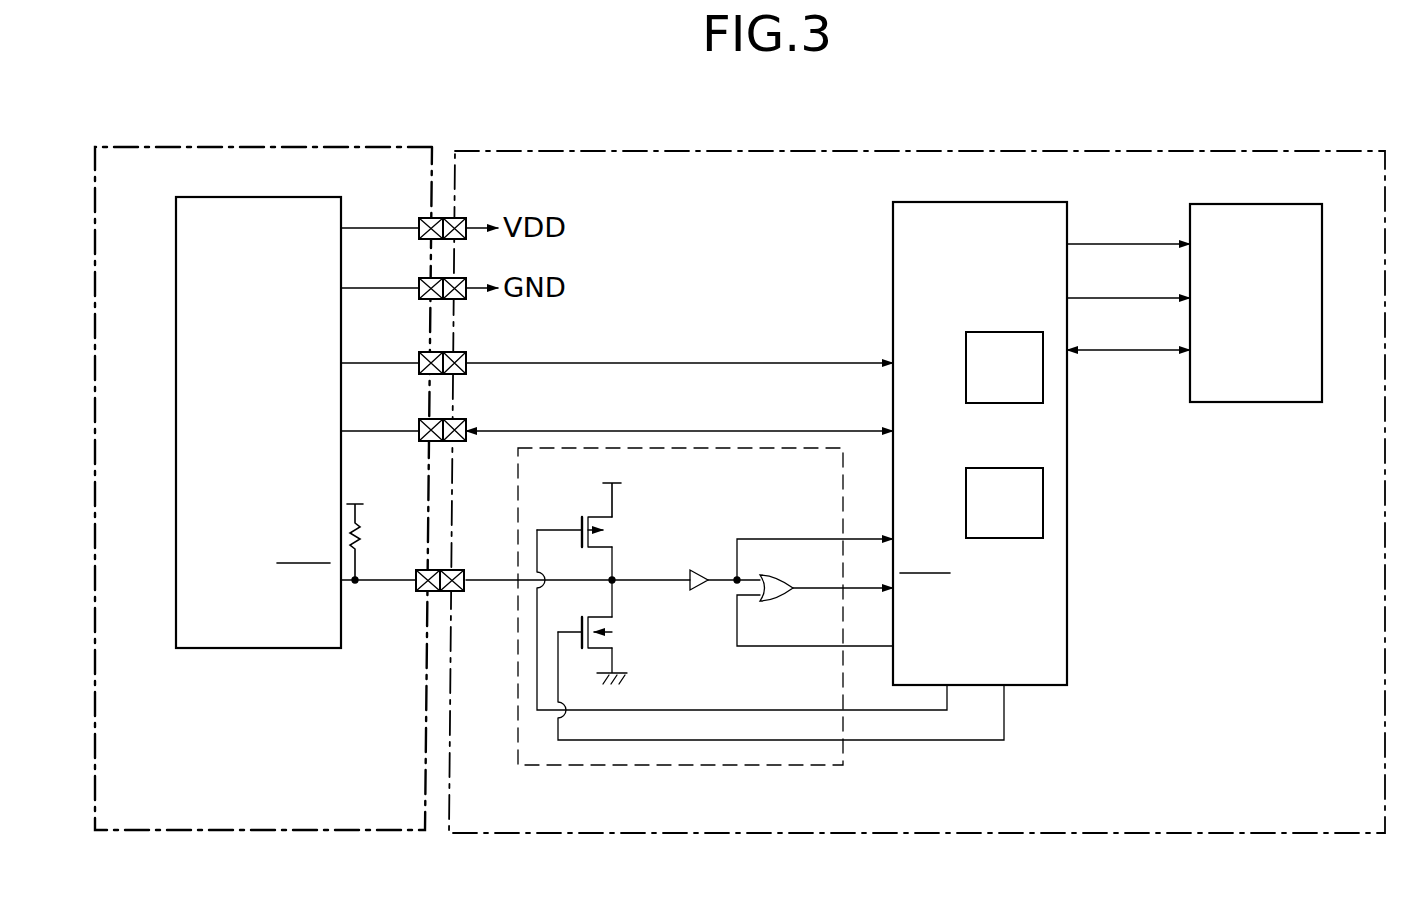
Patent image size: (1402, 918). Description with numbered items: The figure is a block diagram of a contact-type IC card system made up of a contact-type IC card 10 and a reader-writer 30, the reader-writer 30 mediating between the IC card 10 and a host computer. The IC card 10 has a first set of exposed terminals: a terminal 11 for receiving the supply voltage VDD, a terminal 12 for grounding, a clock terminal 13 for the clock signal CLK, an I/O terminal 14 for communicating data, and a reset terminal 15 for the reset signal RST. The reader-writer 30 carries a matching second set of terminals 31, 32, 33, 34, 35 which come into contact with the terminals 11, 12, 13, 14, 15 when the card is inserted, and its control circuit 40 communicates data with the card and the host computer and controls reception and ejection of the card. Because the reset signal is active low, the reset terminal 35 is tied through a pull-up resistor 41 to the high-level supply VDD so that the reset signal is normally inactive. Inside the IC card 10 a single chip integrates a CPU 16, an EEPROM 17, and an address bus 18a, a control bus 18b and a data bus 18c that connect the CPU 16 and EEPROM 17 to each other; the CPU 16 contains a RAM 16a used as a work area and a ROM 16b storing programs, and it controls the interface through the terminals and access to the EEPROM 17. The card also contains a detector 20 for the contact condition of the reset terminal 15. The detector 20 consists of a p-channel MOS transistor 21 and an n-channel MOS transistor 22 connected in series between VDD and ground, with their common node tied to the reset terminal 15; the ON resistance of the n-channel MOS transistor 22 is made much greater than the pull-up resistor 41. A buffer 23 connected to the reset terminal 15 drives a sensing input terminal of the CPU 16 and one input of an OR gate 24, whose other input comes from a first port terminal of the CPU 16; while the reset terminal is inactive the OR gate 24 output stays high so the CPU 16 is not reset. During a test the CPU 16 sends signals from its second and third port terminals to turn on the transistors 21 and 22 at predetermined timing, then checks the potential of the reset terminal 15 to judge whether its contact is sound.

The contact-type IC card 10 is at (1042, 151).
The terminal 11 is at (464, 218).
The terminal 12 is at (464, 278).
The clock terminal 13 is at (464, 352).
The I/O terminal 14 is at (464, 419).
The reset terminal 15 is at (462, 570).
The CPU 16 is at (1006, 202).
The RAM 16a is at (1006, 332).
The ROM 16b is at (1006, 468).
The EEPROM 17 is at (1253, 204).
The address bus 18a is at (1122, 244).
The control bus 18b is at (1122, 298).
The data bus 18c is at (1122, 350).
The detector 20 is at (600, 765).
The p-channel MOS transistor 21 is at (612, 536).
The n-channel MOS transistor 22 is at (612, 634).
The buffer 23 is at (690, 572).
The OR gate 24 is at (790, 600).
The reader-writer 30 is at (297, 147).
The terminal 31 is at (421, 218).
The terminal 32 is at (421, 278).
The terminal 33 is at (421, 352).
The terminal 34 is at (421, 419).
The reset terminal 35 is at (419, 570).
The control circuit 40 is at (176, 255).
The pull-up resistor 41 is at (362, 535).